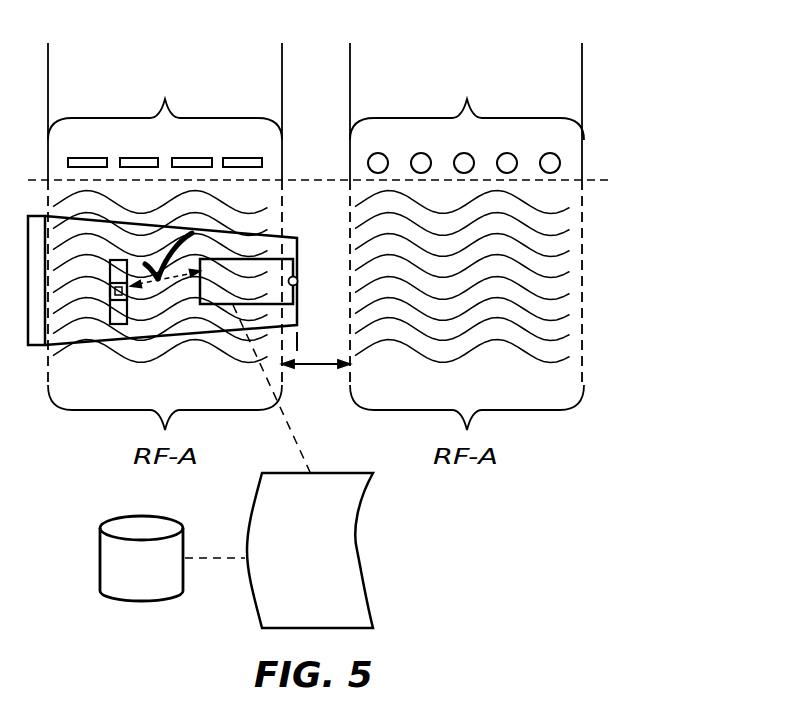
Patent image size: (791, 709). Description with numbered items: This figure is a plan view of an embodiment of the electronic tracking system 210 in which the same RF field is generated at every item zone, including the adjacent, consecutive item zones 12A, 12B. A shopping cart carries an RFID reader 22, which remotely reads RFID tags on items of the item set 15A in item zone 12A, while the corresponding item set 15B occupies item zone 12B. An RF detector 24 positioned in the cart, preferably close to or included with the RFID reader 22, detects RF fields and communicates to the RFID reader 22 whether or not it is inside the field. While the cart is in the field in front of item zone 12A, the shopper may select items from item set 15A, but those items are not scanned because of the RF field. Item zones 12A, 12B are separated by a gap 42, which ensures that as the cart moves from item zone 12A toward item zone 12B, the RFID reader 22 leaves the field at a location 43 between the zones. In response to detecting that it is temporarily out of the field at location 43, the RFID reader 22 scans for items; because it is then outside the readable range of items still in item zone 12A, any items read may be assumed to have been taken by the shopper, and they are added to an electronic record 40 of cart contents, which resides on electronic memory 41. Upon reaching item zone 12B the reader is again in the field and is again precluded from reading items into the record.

The item zone 12A is at (214, 96).
The item zone 12B is at (522, 96).
The item set 15A is at (50, 434).
The antenna array of second lane 15B is at (467, 121).
The RFID reader 22 is at (268, 258).
The RF detector 24 is at (298, 279).
The electronic record 40 is at (358, 543).
The electronic memory 41 is at (143, 604).
The gap 42 is at (310, 367).
The location 43 is at (299, 340).
The electronic tracking system 210 is at (607, 241).